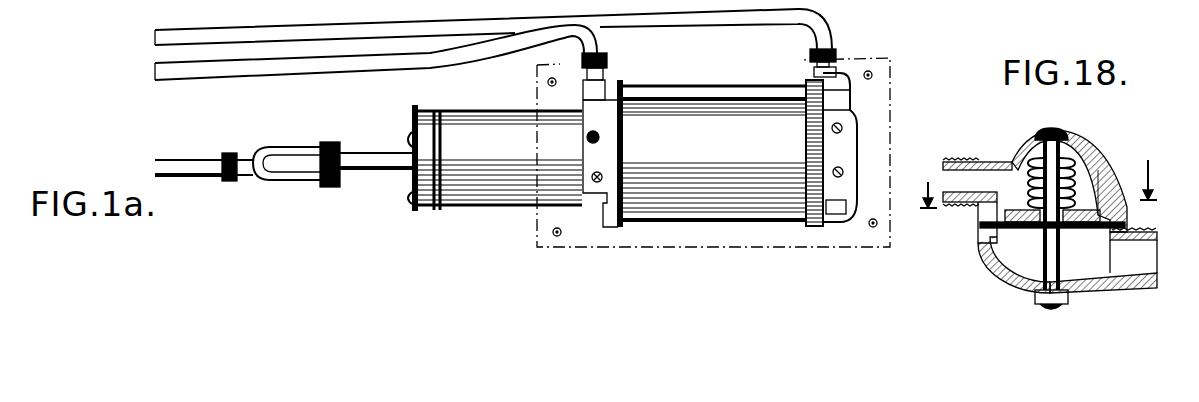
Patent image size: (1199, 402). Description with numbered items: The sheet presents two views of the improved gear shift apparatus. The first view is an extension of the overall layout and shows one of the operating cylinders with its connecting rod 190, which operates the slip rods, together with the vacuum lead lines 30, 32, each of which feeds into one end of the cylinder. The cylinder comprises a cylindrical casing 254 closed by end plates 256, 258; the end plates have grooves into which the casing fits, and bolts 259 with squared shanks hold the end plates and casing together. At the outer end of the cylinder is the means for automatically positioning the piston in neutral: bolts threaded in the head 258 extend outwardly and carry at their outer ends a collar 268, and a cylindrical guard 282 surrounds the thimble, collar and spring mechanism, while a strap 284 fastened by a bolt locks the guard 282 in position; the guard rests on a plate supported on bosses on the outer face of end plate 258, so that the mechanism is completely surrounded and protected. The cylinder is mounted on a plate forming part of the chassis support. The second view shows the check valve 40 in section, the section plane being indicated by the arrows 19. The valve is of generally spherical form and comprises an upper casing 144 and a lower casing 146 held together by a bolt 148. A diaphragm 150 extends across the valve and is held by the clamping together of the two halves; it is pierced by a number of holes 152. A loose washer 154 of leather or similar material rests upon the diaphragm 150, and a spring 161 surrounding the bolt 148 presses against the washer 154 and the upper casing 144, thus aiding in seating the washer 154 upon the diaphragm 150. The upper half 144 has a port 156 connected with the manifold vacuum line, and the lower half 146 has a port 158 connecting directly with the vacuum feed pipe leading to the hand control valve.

In FIG. 1A, the vacuum lead line 30 is at (233, 33).
In FIG. 1A, the vacuum lead line 32 is at (288, 70).
In FIG. 1A, the connecting rod 190 is at (182, 178).
In FIG. 1A, the cylindrical guard 282 is at (477, 113).
In FIG. 1A, the collar 268 is at (418, 213).
In FIG. 1A, the strap 284 is at (430, 205).
In FIG. 1A, the end plate 258 is at (578, 203).
In FIG. 1A, the bolt 259 is at (657, 227).
In FIG. 1A, the cylindrical casing 254 is at (750, 150).
In FIG. 1A, the end plate 256 is at (853, 115).
In FIG. 18, the spring 161 is at (1037, 170).
In FIG. 18, the port 156 is at (968, 180).
In FIG. 18, the bolt 148 is at (1060, 137).
In FIG. 18, the upper casing 144 is at (1093, 168).
In FIG. 18, the loose washer 154 is at (1100, 183).
In FIG. 18, the section line 19 is at (1042, 198).
In FIG. 18, the diaphragm 150 is at (980, 225).
In FIG. 18, the holes 152 is at (1003, 267).
In FIG. 18, the lower casing 146 is at (1017, 280).
In FIG. 18, the check valve 40 is at (1082, 250).
In FIG. 18, the port 158 is at (1140, 267).